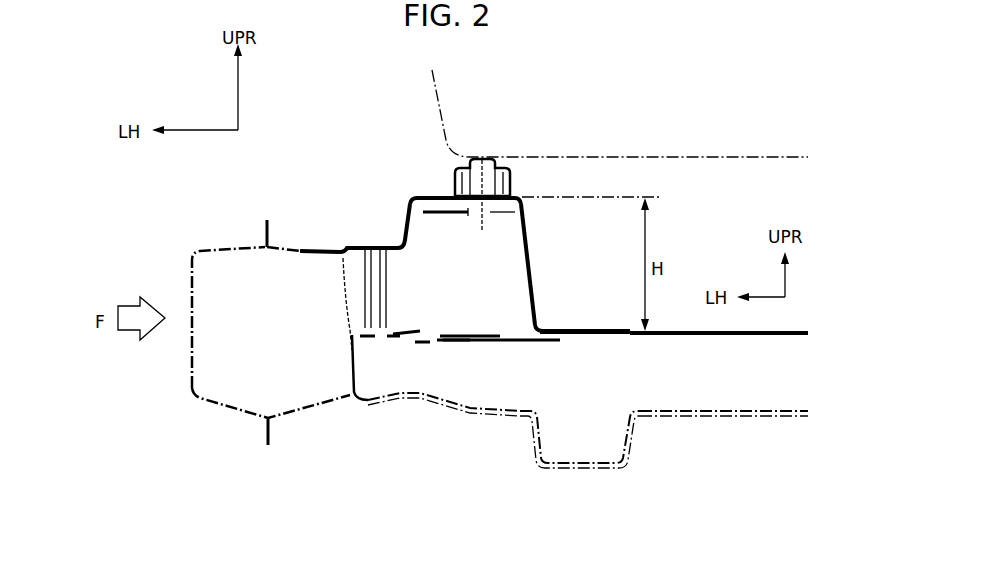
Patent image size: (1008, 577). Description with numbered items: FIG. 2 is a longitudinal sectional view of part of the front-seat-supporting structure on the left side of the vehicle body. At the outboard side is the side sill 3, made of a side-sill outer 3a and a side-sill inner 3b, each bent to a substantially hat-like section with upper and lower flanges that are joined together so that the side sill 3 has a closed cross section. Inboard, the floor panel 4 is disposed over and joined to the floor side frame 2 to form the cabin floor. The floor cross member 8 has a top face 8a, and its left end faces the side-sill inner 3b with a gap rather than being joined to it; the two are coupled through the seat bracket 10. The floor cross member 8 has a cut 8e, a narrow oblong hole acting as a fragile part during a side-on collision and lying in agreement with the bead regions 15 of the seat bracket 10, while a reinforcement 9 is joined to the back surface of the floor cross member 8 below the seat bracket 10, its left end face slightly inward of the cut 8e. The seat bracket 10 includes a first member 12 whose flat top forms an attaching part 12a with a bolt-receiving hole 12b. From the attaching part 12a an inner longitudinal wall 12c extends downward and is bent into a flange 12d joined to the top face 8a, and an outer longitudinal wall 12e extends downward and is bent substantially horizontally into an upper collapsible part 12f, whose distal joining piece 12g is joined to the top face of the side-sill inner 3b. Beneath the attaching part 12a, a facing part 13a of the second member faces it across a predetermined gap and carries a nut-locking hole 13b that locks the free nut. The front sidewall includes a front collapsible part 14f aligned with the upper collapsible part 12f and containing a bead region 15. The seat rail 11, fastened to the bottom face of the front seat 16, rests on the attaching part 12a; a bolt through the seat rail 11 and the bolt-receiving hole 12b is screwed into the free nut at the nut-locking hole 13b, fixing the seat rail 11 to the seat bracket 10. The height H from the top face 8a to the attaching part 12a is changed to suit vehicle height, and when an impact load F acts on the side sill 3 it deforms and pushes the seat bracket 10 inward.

The floor side frame 2 is at (598, 470).
The side sill 3 is at (227, 358).
The side-sill outer 3a is at (190, 380).
The side-sill inner 3b is at (291, 418).
The floor panel 4 is at (588, 472).
The floor cross member 8 is at (593, 368).
The top face 8a is at (670, 331).
The cut 8e is at (384, 337).
The reinforcement 9 is at (510, 345).
The seat bracket 10 is at (545, 217).
The seat rail 11 is at (455, 192).
The first member 12 is at (440, 250).
The attaching part 12a is at (512, 196).
The bolt-receiving hole 12b is at (492, 214).
The longitudinal wall 12c is at (530, 255).
The flange 12d is at (555, 327).
The longitudinal wall 12e is at (404, 235).
The upper collapsible part 12f is at (343, 250).
The joining piece 12g is at (310, 248).
The facing part 13a is at (442, 214).
The nut-locking hole 13b is at (470, 215).
The front collapsible part 14f is at (357, 308).
The bead region 15 is at (365, 288).
The front seat 16 is at (432, 93).